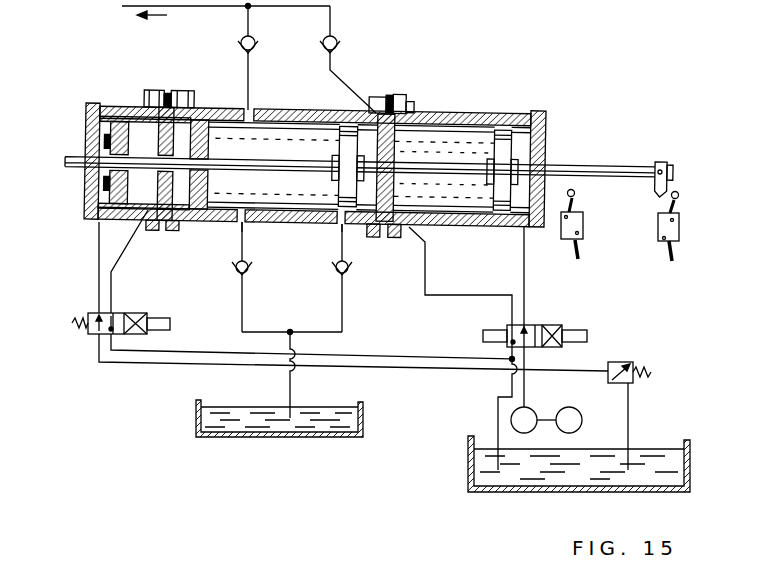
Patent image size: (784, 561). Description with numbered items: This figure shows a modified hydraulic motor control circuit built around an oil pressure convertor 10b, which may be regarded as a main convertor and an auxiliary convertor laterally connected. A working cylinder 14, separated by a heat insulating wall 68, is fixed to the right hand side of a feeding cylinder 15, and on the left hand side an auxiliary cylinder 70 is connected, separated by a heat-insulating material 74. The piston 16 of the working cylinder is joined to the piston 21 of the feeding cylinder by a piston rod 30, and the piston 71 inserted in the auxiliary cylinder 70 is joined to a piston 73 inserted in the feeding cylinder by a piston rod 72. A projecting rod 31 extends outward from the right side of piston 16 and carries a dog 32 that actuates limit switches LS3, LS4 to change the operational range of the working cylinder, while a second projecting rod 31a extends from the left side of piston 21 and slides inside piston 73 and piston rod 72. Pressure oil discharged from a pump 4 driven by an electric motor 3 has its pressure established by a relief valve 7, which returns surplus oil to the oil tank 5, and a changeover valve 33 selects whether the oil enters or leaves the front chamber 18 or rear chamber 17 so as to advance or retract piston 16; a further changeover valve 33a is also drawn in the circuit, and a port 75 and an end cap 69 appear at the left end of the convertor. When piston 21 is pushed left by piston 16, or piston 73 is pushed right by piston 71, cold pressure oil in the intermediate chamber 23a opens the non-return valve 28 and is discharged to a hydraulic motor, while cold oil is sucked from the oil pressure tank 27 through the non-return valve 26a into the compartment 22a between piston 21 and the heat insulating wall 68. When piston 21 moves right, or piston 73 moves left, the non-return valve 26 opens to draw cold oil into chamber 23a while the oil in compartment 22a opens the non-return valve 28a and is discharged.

The electric motor 3 is at (580, 411).
The pump 4 is at (531, 412).
The oil tank 5 is at (691, 466).
The relief valve 7 is at (626, 362).
The oil pressure convertor 10b is at (542, 111).
The working cylinder 14 is at (470, 126).
The feeding cylinder 15 is at (307, 126).
The piston 16 is at (507, 127).
The rear chamber 17 is at (516, 222).
The front chamber 18 is at (451, 220).
The piston 21 is at (348, 125).
The compartment 22a is at (363, 201).
The intermediate chamber 23a is at (267, 200).
The non-return valve 26 is at (250, 266).
The non-return valve 26a is at (349, 268).
The oil pressure tank 27 is at (364, 437).
The non-return valve 28 is at (254, 39).
The non-return valve 28a is at (337, 39).
The piston rod 30 is at (434, 163).
The projecting rod 31 is at (592, 166).
The projecting rod 31a is at (272, 164).
The dog 32 is at (668, 184).
The changeover valve 33 is at (560, 325).
The changeover valve 33a is at (127, 315).
The heat insulating wall 68 is at (394, 114).
The end cap 69 is at (88, 107).
The auxiliary cylinder 70 is at (132, 126).
The piston 71 is at (100, 118).
The piston rod 72 is at (152, 148).
The piston 73 is at (203, 127).
The heat-insulating material 74 is at (173, 110).
The port 75 is at (138, 223).
The limit switch LS3 is at (679, 229).
The limit switch LS4 is at (584, 227).